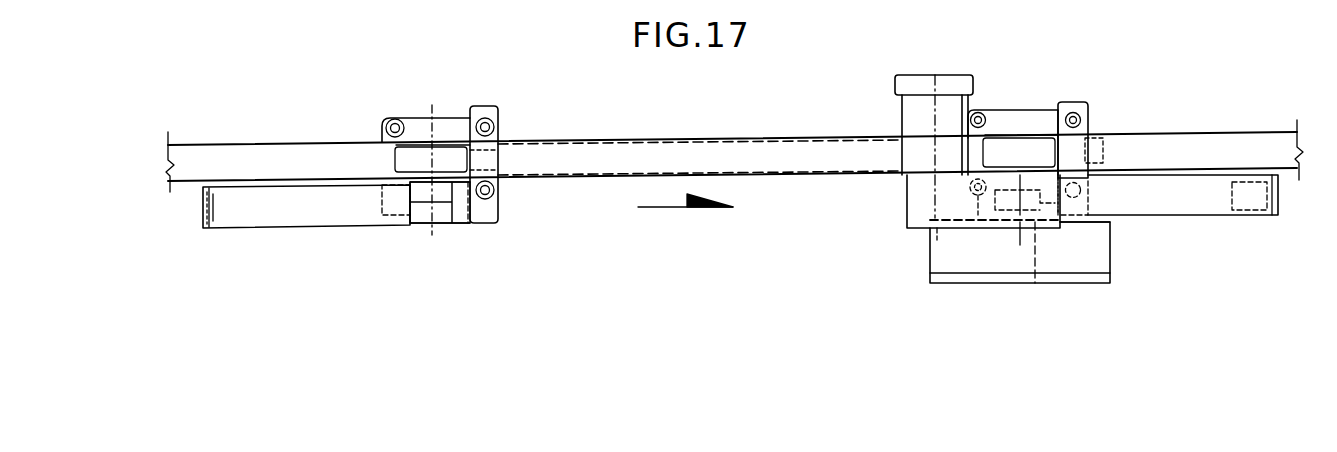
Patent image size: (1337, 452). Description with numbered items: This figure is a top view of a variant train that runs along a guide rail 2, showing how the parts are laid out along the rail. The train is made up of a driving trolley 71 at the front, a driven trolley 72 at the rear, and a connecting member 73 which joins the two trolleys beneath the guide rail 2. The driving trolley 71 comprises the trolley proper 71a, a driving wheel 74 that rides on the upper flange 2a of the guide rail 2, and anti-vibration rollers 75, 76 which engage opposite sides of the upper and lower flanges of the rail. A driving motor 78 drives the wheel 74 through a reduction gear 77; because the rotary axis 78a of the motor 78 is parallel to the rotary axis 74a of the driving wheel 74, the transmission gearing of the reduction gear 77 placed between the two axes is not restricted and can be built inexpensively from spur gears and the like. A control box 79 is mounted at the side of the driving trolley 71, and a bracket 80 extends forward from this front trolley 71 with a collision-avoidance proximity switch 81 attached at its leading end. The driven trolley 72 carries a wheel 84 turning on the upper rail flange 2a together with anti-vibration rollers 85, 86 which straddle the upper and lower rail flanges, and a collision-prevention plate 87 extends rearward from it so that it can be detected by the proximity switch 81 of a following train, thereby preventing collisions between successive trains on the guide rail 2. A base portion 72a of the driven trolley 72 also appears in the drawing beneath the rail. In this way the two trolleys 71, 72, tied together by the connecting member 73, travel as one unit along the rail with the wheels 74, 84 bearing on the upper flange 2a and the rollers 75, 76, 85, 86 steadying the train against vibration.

The guide rail 2 is at (1207, 124).
The upper flange 2a is at (779, 162).
The driving trolley 71 is at (1014, 93).
The trolley proper 71a is at (1035, 233).
The driven trolley 72 is at (437, 110).
The fixed block base 72a is at (441, 212).
The connecting member 73 is at (702, 152).
The driving wheel 74 is at (1050, 113).
The rotary axis of the driving wheel 74a is at (1018, 128).
The anti-vibration roller 75 is at (1077, 109).
The anti-vibration roller 76 is at (976, 112).
The reduction gear 77 is at (920, 204).
The driving motor 78 is at (900, 115).
The rotary axis of the motor 78a is at (932, 100).
The control box 79 is at (992, 267).
The bracket 80 is at (1190, 206).
The collision-avoidance proximity switch 81 is at (1250, 208).
The wheel 84 is at (452, 148).
The anti-vibration roller 85 is at (500, 186).
The anti-vibration roller 86 is at (383, 158).
The collision-prevention plate 87 is at (265, 210).